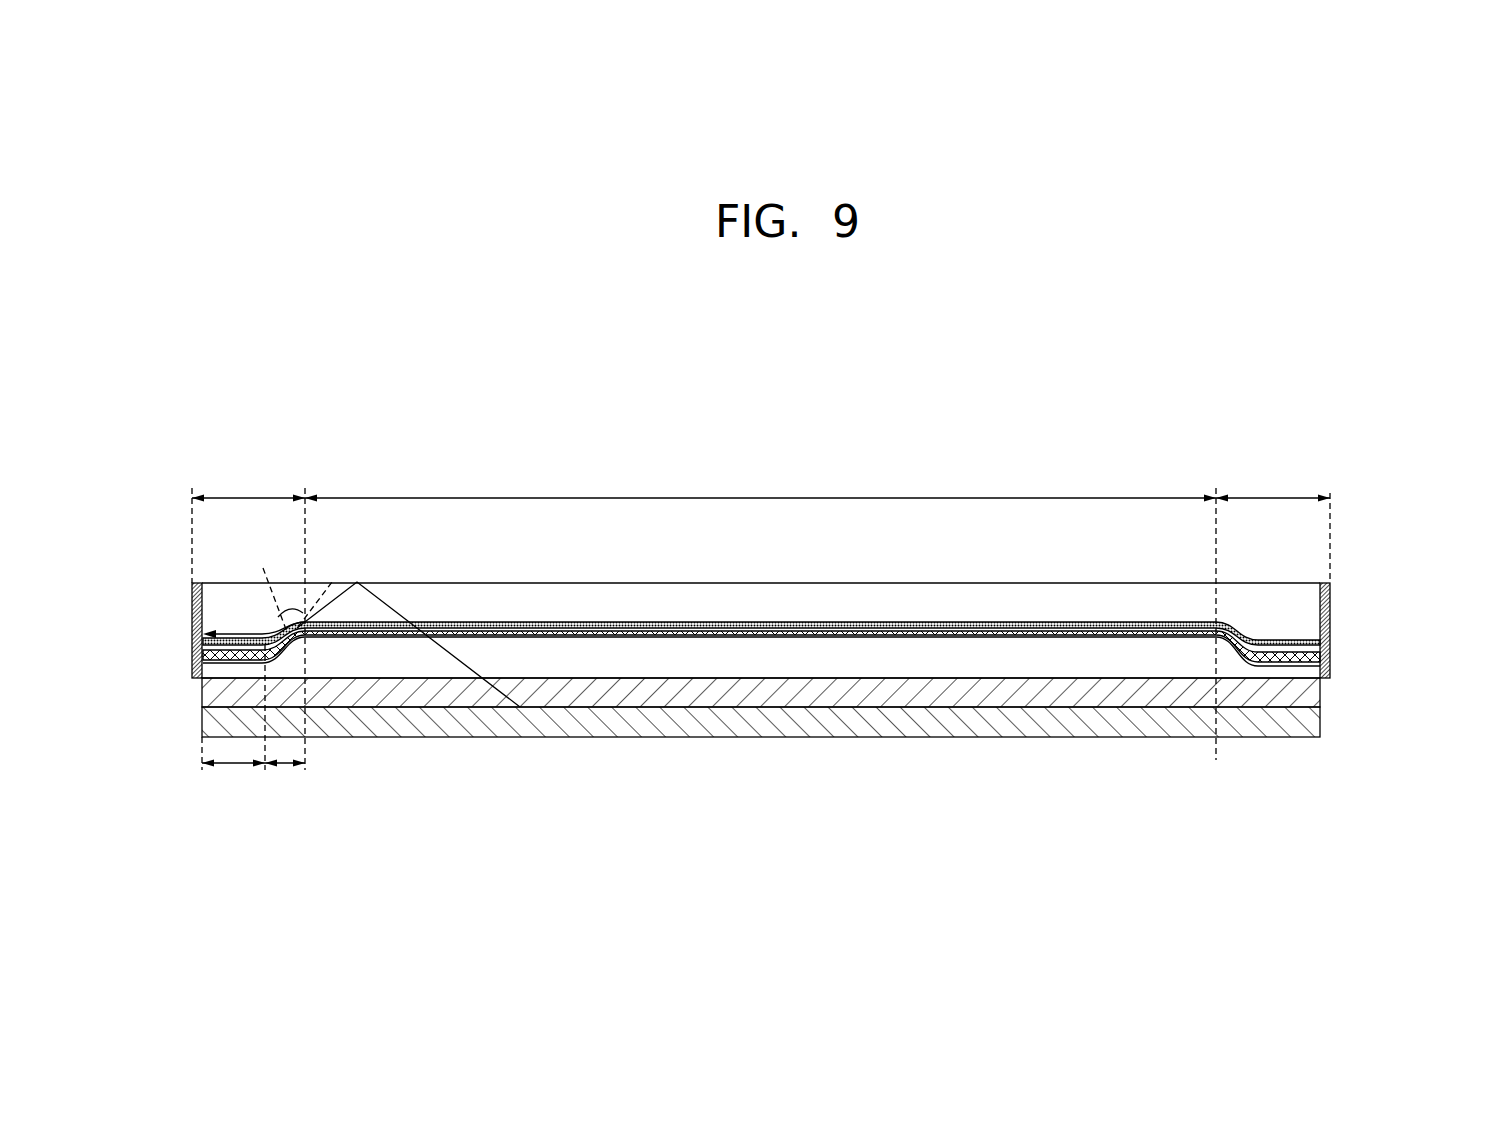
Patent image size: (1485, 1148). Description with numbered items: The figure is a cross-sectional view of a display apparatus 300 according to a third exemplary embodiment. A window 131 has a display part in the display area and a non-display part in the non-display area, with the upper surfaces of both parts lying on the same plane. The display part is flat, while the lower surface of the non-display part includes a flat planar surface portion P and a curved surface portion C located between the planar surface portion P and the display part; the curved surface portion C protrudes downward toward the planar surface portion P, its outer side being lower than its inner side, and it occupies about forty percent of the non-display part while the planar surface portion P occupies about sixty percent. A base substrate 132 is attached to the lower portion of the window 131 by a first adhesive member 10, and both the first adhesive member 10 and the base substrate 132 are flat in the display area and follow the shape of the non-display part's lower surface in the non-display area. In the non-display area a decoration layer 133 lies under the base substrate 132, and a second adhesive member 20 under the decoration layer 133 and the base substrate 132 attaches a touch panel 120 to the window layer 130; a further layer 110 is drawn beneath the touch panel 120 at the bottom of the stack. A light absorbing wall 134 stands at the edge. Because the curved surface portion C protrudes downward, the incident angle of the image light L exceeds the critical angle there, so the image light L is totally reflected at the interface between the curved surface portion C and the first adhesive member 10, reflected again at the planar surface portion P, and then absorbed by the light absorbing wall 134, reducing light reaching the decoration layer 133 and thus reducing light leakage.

The display apparatus 300 is at (1183, 420).
The first adhesive member 10 is at (637, 622).
The second adhesive member 20 is at (733, 660).
The display panel 110 is at (1307, 725).
The touch panel 120 is at (1307, 695).
The window layer 130 is at (1420, 603).
The window 131 is at (749, 571).
The base substrate 132 is at (1323, 660).
The decoration layer 133 is at (1313, 668).
The light absorbing wall 134 is at (197, 580).
The image light L is at (394, 603).
The bending point B is at (294, 591).
The planar surface portion P is at (205, 653).
The curved surface portion C is at (293, 657).